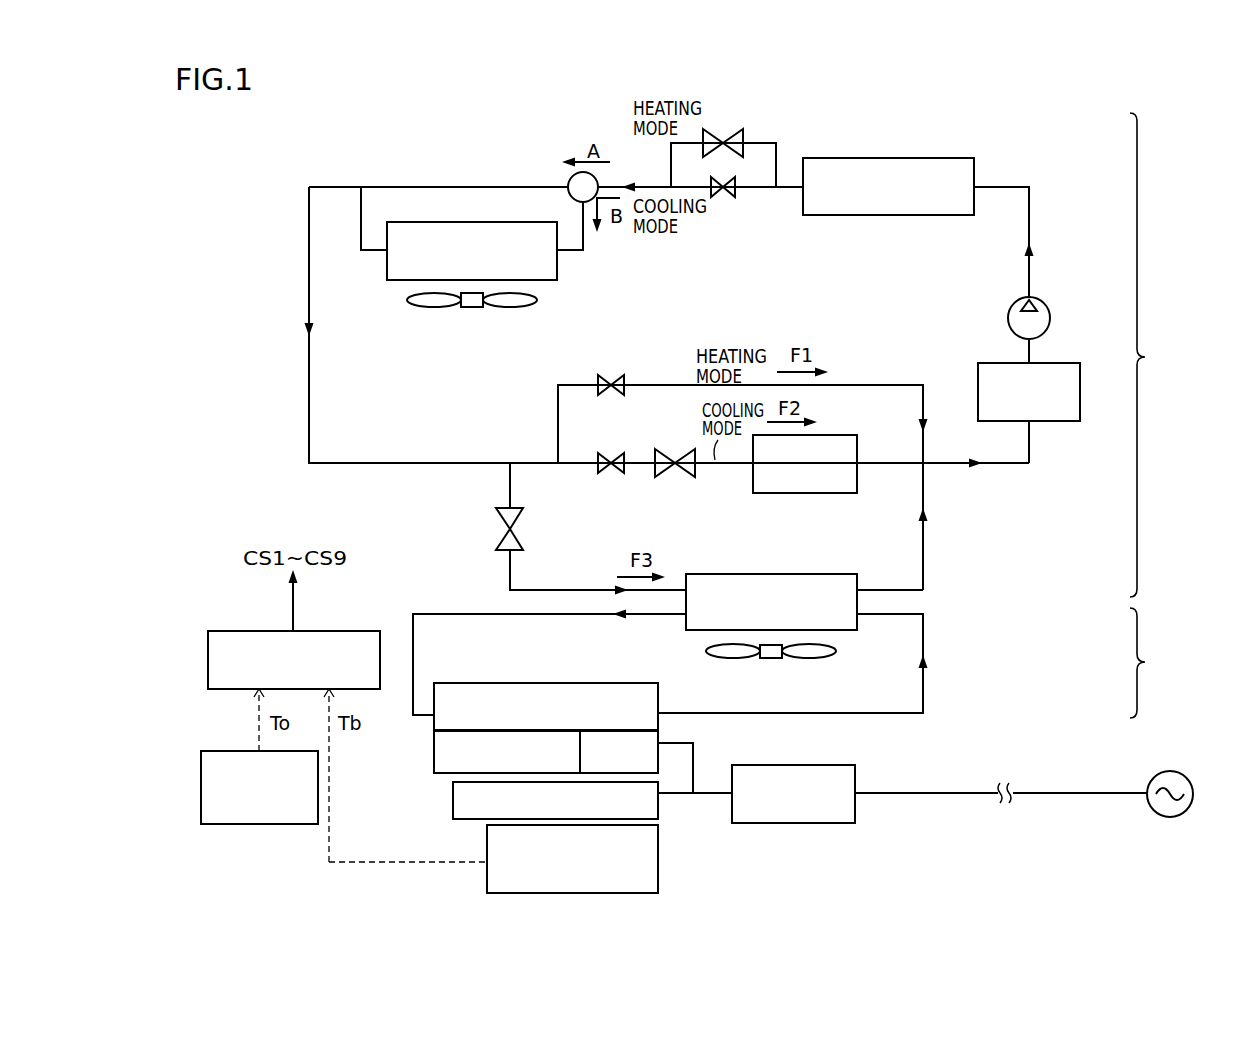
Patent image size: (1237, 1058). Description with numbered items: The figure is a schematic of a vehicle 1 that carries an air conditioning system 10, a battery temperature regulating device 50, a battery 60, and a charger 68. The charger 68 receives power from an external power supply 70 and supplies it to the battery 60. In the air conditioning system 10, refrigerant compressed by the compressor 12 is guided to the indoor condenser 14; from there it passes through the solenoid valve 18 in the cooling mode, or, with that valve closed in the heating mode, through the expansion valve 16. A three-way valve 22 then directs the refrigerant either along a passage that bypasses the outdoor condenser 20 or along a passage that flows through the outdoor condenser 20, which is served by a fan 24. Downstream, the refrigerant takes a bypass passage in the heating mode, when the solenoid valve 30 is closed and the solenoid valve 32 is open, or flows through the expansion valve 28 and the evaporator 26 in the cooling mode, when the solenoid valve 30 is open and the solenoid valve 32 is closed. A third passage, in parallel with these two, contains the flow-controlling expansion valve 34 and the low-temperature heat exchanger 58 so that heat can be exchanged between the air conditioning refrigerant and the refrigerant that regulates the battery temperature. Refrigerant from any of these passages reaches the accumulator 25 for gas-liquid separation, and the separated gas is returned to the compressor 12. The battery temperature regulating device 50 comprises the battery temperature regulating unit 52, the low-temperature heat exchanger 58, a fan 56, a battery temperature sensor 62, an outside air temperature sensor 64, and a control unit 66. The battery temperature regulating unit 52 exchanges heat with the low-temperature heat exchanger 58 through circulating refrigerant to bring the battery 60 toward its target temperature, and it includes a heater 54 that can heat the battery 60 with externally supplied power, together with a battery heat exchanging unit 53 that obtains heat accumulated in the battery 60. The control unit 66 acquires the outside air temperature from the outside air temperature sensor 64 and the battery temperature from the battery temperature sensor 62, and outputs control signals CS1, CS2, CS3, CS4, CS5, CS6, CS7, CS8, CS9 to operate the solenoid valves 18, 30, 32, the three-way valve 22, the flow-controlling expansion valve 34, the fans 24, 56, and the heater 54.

The vehicle 1 is at (1120, 103).
The air conditioning system 10 is at (1153, 355).
The compressor 12 is at (1045, 307).
The indoor condenser 14 is at (917, 158).
The expansion valve 16 is at (731, 133).
The solenoid valve 18 is at (733, 194).
The outdoor condenser 20 is at (520, 222).
The three-way valve 22 is at (591, 178).
The fan 24 is at (407, 298).
The accumulator 25 is at (1053, 363).
The evaporator 26 is at (828, 435).
The expansion valve 28 is at (671, 450).
The solenoid valve 30 is at (620, 472).
The solenoid valve 32 is at (620, 378).
The flow-controlling expansion valve 34 is at (519, 538).
The battery temperature regulating device 50 is at (1152, 663).
The battery temperature regulating unit 52 is at (616, 683).
The battery heat exchanging unit 53 is at (433, 744).
The heater 54 is at (660, 735).
The fan 56 is at (837, 651).
The low-temperature heat exchanger 58 is at (808, 574).
The battery 60 is at (453, 800).
The battery temperature sensor 62 is at (658, 860).
The outside air temperature sensor 64 is at (230, 751).
The control unit 66 is at (330, 631).
The charger 68 is at (808, 765).
The external power supply 70 is at (1180, 772).
The control signal CS1 is at (1003, 318).
The control signal CS2 is at (723, 203).
The control signal CS3 is at (563, 177).
The control signal CS4 is at (473, 311).
The control signal CS5 is at (523, 679).
The control signal CS6 is at (771, 662).
The control signal CS7 is at (492, 529).
The control signal CS8 is at (611, 477).
The control signal CS9 is at (611, 371).